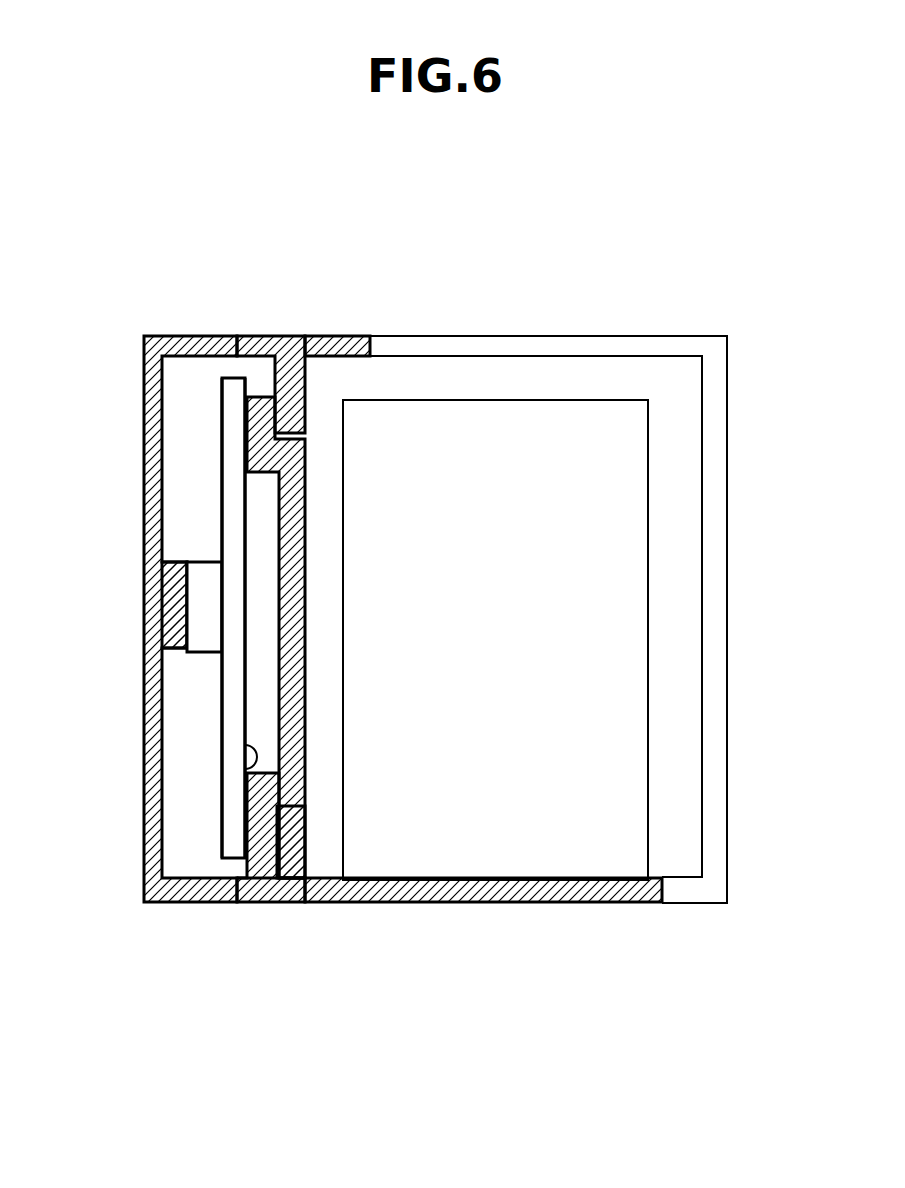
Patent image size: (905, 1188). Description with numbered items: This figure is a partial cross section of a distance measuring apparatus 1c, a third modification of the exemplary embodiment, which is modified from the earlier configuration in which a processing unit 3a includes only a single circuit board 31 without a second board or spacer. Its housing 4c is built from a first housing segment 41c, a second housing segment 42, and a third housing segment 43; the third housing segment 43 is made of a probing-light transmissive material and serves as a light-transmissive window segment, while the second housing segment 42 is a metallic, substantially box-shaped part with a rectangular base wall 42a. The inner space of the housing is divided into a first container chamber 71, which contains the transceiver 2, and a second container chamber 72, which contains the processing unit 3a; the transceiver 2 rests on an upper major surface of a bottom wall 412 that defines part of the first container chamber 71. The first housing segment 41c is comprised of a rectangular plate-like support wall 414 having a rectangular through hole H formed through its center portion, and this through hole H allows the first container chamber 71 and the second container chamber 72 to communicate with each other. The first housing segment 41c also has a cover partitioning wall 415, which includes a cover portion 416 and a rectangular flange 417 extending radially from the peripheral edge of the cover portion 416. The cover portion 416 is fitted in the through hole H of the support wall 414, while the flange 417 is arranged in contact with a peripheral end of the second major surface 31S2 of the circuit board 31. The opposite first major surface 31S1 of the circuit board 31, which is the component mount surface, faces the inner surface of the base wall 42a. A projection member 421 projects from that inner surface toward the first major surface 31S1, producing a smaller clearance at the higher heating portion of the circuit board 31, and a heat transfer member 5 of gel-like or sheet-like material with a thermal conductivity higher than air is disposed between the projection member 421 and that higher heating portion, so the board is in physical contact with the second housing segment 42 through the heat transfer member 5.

The distance measuring apparatus 1c is at (610, 184).
The housing 4c is at (145, 238).
The second housing segment 42 is at (168, 336).
The first housing segment 41c is at (297, 336).
The third housing segment 43 is at (413, 348).
The first container chamber 71 is at (575, 388).
The through hole H is at (288, 437).
The heat transfer member 5 is at (202, 578).
The projection member 421 is at (170, 600).
The base wall 42a is at (148, 675).
The second container chamber 72 is at (180, 733).
The cover partitioning wall 415 is at (288, 622).
The processing unit 3a is at (241, 757).
The support wall 414 is at (303, 832).
The circuit board 31 is at (233, 840).
The first major surface 31S1 is at (222, 812).
The second major surface 31S2 is at (245, 766).
The flange 417 is at (258, 842).
The cover portion 416 is at (305, 723).
The transceiver 2 is at (442, 862).
The bottom wall 412 is at (570, 904).